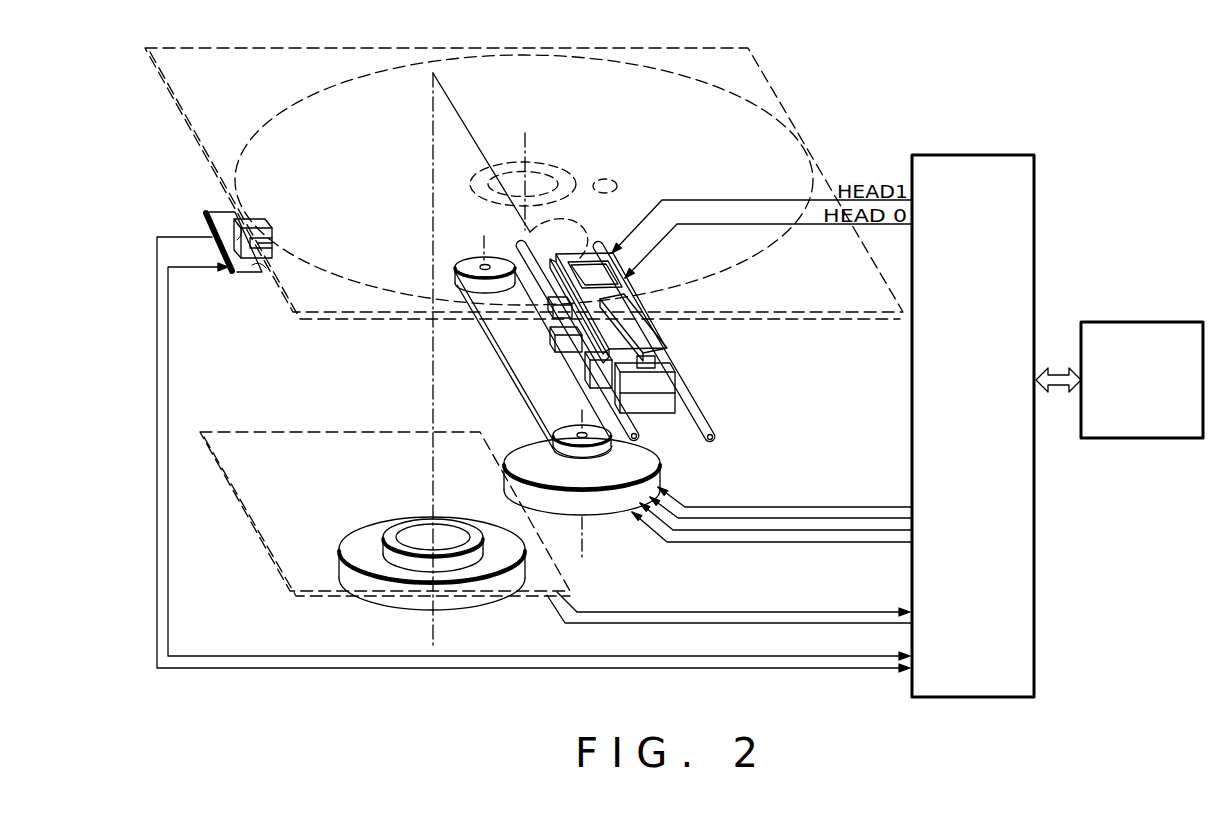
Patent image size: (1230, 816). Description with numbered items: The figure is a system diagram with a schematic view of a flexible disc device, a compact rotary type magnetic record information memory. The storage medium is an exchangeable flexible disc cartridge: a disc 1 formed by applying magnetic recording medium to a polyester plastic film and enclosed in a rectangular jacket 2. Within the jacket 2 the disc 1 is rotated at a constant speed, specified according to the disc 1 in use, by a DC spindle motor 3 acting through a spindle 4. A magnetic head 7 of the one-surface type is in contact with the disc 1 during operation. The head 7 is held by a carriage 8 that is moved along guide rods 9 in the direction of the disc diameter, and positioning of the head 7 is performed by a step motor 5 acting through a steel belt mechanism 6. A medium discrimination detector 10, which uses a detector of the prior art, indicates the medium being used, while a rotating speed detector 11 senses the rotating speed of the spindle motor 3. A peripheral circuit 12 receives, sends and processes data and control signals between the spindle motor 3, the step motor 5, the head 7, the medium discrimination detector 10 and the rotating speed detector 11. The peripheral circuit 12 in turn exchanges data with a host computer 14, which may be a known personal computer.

The disc 1 is at (773, 146).
The jacket 2 is at (815, 168).
The motor 3 is at (450, 600).
The spindle 4 is at (453, 523).
The step motor 5 is at (617, 512).
The steel belt mechanism 6 is at (508, 362).
The magnetic head 7 is at (600, 270).
The carriage 8 is at (661, 418).
The guide rods 9 is at (690, 400).
The medium discrimination detector 10 is at (208, 211).
The rotating speed detector 11 is at (330, 450).
The peripheral circuit 12 is at (1033, 215).
The host computer 14 is at (1135, 327).